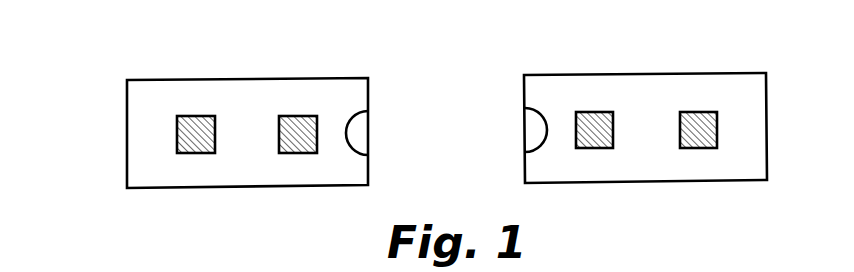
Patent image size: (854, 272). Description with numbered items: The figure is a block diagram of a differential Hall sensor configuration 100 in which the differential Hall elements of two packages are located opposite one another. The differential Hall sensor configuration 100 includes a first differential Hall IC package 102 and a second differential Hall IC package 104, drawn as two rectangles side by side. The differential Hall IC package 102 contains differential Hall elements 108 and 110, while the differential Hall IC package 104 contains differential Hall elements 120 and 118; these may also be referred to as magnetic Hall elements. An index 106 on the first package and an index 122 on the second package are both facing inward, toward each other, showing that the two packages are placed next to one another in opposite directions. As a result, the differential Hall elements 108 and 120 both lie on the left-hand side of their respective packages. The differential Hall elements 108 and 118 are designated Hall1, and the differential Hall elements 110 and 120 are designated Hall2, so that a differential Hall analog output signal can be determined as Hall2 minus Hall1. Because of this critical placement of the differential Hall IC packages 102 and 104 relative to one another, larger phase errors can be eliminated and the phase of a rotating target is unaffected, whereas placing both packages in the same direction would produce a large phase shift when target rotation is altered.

The differential Hall sensor configuration 100 is at (142, 32).
The differential Hall IC package 102 is at (232, 188).
The differential Hall IC package 104 is at (657, 183).
The index 106 is at (358, 132).
The differential Hall element 108 is at (196, 116).
The differential Hall element 110 is at (300, 116).
The differential Hall element 118 is at (704, 112).
The differential Hall element 120 is at (598, 112).
The index 122 is at (530, 128).